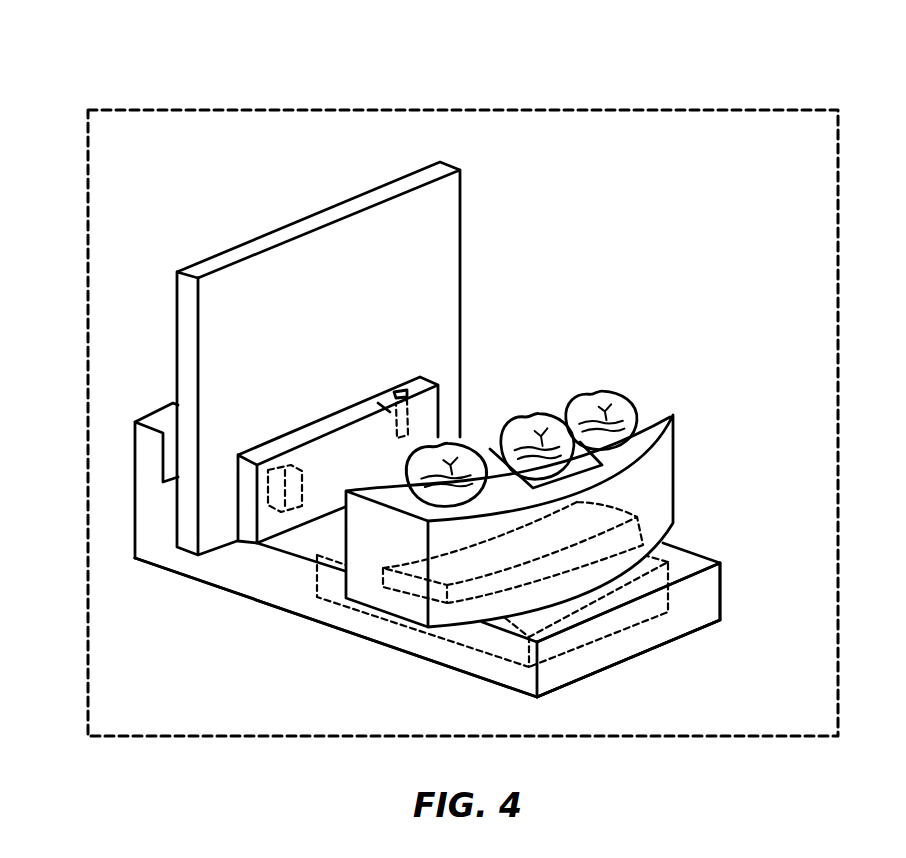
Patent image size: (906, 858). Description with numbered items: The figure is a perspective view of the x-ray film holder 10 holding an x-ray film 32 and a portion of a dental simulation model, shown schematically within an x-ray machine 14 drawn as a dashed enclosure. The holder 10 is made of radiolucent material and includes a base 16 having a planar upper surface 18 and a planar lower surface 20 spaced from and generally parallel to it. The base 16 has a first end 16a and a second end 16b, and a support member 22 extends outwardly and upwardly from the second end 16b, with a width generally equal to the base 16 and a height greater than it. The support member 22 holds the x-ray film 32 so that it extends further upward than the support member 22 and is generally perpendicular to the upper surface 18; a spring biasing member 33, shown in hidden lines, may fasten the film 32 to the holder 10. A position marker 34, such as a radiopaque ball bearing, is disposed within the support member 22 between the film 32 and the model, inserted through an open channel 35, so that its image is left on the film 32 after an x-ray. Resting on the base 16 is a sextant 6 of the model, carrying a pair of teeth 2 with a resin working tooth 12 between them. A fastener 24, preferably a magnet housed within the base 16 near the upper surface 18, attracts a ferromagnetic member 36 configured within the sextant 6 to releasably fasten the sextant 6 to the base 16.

The teeth 2 is at (402, 470).
The sextant 6 is at (662, 453).
The x-ray film holder 10 is at (313, 632).
The working tooth 12 is at (535, 410).
The x-ray machine 14 is at (221, 108).
The base 16 is at (708, 593).
The first end 16a is at (582, 657).
The second end 16b is at (269, 592).
The planar upper surface 18 is at (688, 560).
The planar lower surface 20 is at (650, 650).
The support member 22 is at (133, 505).
The fastener 24 is at (462, 640).
The x-ray film 32 is at (288, 226).
The spring biasing member 33 is at (268, 492).
The position marker 34 is at (372, 398).
The open channel 35 is at (400, 390).
The ferromagnetic member 36 is at (648, 492).